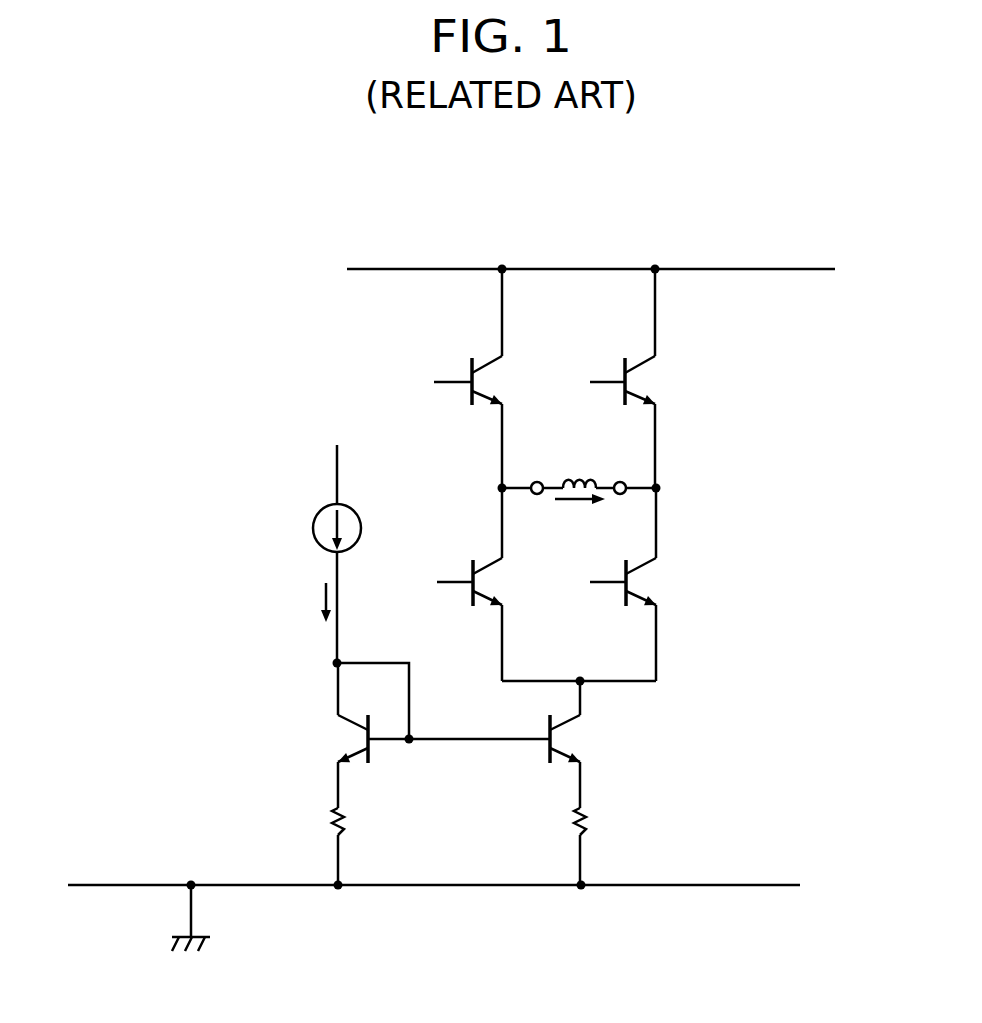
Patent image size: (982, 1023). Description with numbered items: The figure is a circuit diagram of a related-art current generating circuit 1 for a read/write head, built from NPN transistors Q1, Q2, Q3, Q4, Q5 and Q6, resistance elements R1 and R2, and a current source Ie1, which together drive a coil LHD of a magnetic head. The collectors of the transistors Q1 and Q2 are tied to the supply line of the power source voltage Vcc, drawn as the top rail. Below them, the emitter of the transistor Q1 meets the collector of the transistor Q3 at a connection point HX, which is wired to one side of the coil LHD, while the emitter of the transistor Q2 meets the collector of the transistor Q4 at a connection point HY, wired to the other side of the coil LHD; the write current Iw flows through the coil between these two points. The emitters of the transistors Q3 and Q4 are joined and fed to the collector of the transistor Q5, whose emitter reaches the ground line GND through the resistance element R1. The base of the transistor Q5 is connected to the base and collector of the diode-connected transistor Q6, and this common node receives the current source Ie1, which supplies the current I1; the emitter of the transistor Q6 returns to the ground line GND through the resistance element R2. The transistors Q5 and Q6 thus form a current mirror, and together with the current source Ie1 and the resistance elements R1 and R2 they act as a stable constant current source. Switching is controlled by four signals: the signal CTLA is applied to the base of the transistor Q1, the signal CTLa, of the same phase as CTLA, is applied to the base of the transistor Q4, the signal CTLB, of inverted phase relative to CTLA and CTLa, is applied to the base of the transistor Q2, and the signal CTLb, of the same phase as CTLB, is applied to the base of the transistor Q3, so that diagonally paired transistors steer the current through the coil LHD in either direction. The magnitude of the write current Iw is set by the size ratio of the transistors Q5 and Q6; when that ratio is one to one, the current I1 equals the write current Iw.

The current generating circuit 1 is at (511, 196).
The transistor Q1 is at (484, 358).
The transistor Q2 is at (635, 358).
The transistor Q3 is at (481, 563).
The transistor Q4 is at (636, 606).
The transistor Q5 is at (588, 742).
The transistor Q6 is at (352, 740).
The resistance element R1 is at (588, 826).
The resistance element R2 is at (345, 825).
The coil of a magnetic head LHD is at (573, 484).
The connection point HX is at (481, 489).
The connection point HY is at (677, 489).
The write current Iw is at (580, 516).
The current source Ie1 is at (313, 528).
The current I1 is at (315, 602).
The signal CTLA is at (417, 382).
The signal CTLB is at (572, 382).
The signal CTLa is at (576, 582).
The signal CTLb is at (425, 582).
The power source voltage Vcc is at (562, 268).
The ground line GND is at (463, 911).